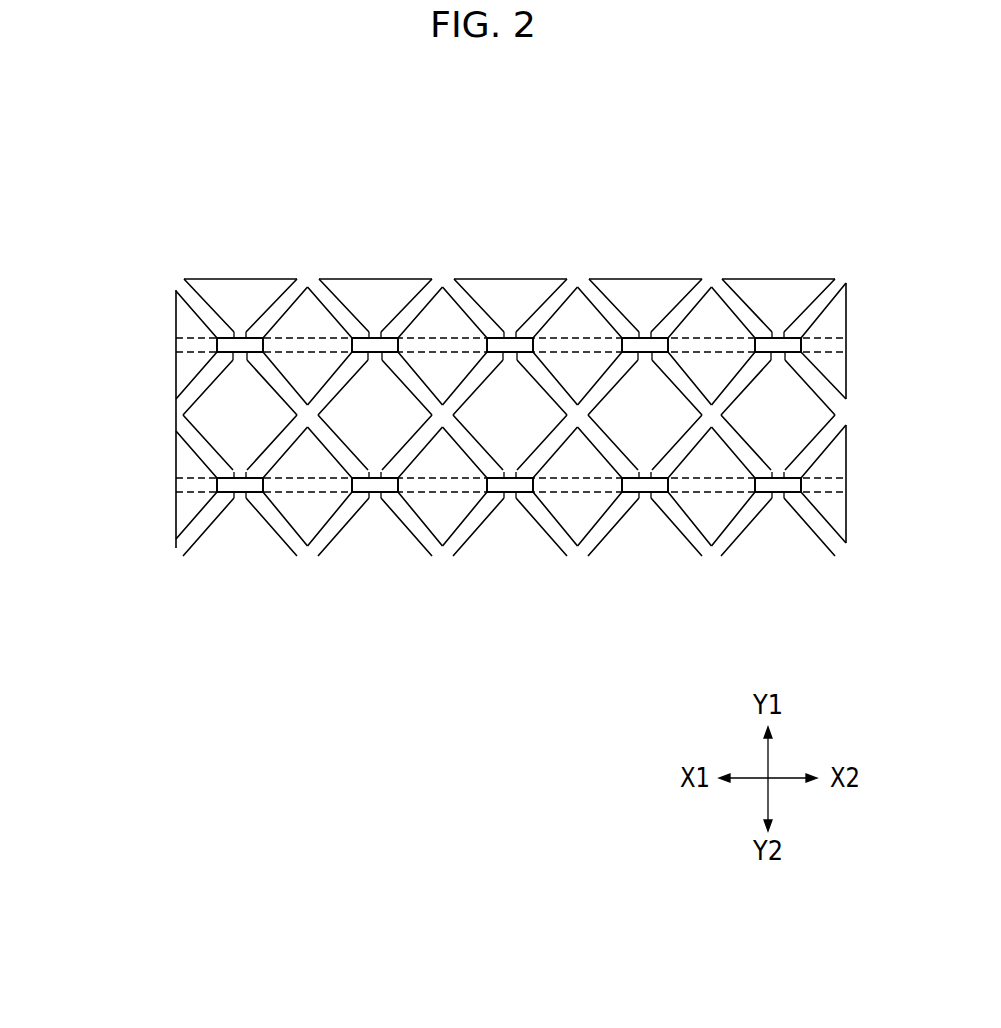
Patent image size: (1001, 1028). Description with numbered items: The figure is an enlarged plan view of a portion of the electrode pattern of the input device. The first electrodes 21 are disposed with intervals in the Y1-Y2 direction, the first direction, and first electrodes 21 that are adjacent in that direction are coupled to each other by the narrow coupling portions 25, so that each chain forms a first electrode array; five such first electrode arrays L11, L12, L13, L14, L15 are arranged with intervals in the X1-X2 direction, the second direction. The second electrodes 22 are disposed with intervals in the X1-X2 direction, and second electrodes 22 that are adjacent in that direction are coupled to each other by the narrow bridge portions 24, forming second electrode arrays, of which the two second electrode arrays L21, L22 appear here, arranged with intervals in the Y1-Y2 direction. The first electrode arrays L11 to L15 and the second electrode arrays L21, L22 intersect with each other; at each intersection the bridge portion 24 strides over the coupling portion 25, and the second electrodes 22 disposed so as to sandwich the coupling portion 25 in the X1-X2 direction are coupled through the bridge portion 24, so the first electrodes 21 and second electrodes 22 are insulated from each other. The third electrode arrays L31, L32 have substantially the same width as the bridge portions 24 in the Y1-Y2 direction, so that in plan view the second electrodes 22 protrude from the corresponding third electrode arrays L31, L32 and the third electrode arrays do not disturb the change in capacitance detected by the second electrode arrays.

The first electrode 21 is at (222, 284).
The second electrode 22 is at (302, 290).
The bridge portion 24 is at (362, 322).
The coupling portion 25 is at (384, 326).
The first electrode array L11 is at (243, 228).
The first electrode array L12 is at (375, 228).
The first electrode array L13 is at (510, 228).
The first electrode array L14 is at (643, 228).
The first electrode array L15 is at (777, 228).
The second electrode array L21 is at (154, 345).
The second electrode array L22 is at (154, 487).
The third electrode array L31 is at (822, 334).
The third electrode array L32 is at (847, 478).